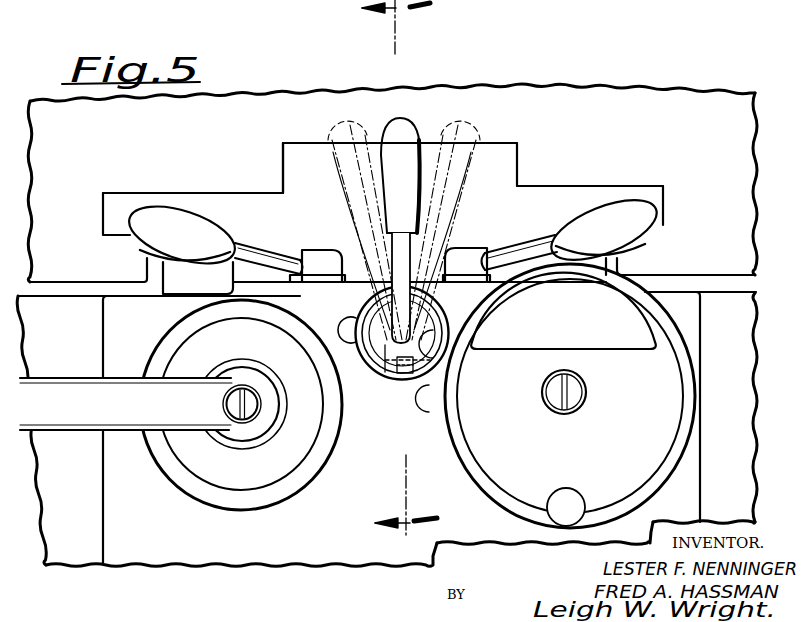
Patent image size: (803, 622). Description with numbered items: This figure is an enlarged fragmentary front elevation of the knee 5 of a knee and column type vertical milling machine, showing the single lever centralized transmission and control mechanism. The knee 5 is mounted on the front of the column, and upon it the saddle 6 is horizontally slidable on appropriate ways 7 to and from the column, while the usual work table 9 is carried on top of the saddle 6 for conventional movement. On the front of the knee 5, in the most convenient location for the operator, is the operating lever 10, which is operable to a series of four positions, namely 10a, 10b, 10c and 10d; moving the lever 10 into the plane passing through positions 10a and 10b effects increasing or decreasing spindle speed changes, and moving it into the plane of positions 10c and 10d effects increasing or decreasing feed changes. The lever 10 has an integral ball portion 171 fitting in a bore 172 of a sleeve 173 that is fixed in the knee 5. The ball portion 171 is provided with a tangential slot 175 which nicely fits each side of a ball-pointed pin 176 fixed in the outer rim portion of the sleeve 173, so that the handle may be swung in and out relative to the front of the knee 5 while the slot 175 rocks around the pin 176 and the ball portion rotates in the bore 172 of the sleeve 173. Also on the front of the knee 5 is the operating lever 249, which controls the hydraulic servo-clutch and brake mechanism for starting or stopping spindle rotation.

The knee 5 is at (302, 170).
The saddle 6 is at (392, 98).
The ways 7 is at (270, 170).
The work table 9 is at (397, 275).
The operating lever 10 is at (409, 132).
The lever position 10a is at (357, 130).
The lever position 10b is at (376, 232).
The lever position 10c is at (458, 132).
The lever position 10d is at (432, 232).
The operating lever 249 is at (217, 238).
The ball portion 171 is at (407, 368).
The bore 172 is at (378, 318).
The sleeve 173 is at (375, 302).
The tangential slot 175 is at (415, 384).
The ball-pointed pin 176 is at (392, 406).